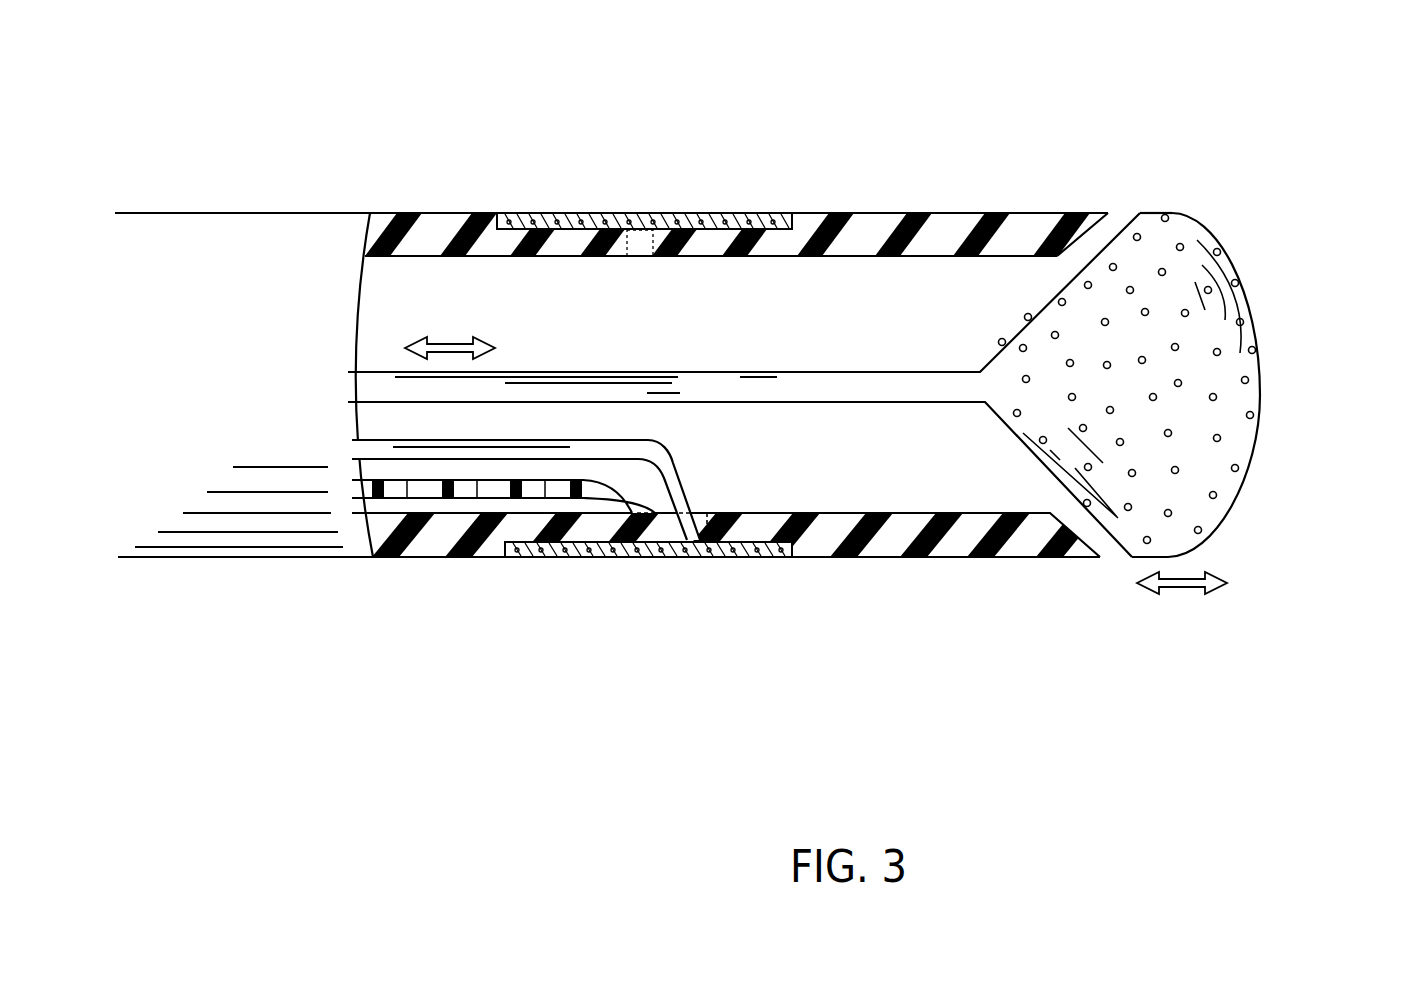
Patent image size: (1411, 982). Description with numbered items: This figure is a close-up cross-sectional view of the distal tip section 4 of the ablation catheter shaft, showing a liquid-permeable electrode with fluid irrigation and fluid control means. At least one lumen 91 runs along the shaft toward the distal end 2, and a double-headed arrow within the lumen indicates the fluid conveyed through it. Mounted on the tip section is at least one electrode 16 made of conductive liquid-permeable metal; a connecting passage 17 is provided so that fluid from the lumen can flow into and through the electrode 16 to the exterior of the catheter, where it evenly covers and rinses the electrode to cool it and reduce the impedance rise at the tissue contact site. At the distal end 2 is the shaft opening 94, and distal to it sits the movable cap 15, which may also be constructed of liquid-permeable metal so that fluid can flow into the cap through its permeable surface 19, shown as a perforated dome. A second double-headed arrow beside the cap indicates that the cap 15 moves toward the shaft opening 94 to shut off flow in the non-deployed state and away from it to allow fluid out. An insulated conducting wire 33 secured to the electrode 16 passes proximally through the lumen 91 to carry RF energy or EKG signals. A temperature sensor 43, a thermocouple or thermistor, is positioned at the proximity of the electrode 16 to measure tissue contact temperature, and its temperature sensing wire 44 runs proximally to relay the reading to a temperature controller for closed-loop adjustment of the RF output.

The distal tip section 4 is at (242, 207).
The electrode 16 is at (702, 212).
The connecting passage 17 is at (650, 212).
The lumen 91 is at (765, 320).
The shaft opening 94 is at (1127, 202).
The movable cap 15 is at (1247, 265).
The permeable surface 19 is at (1225, 437).
The distal end 2 is at (1095, 568).
The insulated conducting wire 33 is at (462, 497).
The temperature sensing wire 44 is at (563, 460).
The temperature sensor 43 is at (703, 567).